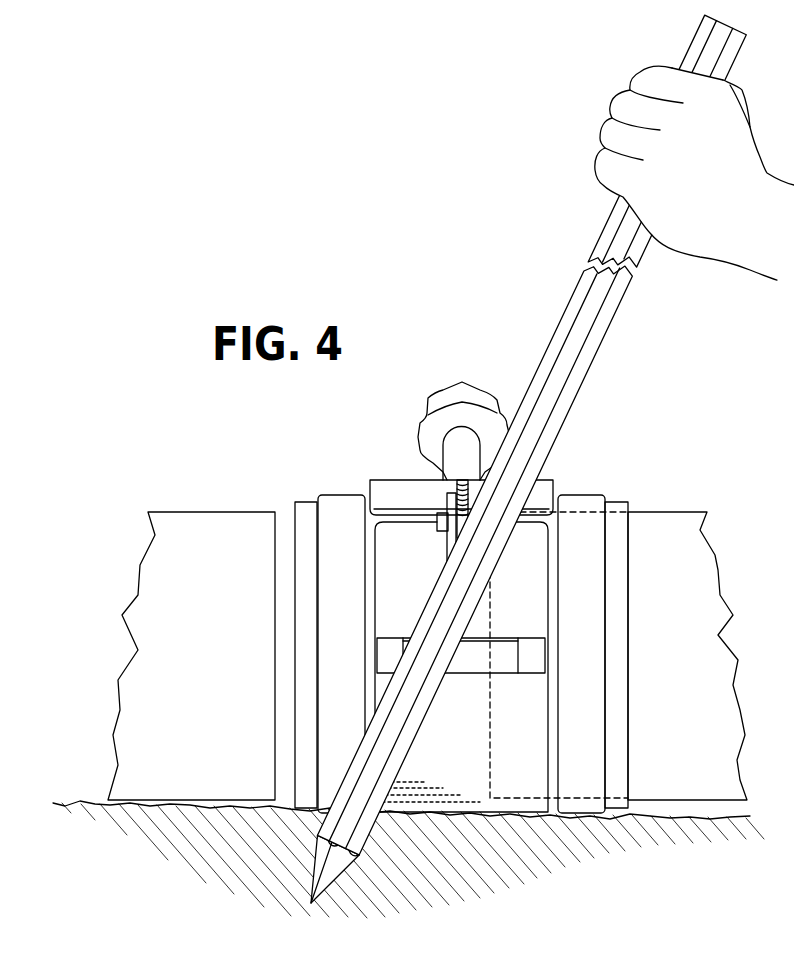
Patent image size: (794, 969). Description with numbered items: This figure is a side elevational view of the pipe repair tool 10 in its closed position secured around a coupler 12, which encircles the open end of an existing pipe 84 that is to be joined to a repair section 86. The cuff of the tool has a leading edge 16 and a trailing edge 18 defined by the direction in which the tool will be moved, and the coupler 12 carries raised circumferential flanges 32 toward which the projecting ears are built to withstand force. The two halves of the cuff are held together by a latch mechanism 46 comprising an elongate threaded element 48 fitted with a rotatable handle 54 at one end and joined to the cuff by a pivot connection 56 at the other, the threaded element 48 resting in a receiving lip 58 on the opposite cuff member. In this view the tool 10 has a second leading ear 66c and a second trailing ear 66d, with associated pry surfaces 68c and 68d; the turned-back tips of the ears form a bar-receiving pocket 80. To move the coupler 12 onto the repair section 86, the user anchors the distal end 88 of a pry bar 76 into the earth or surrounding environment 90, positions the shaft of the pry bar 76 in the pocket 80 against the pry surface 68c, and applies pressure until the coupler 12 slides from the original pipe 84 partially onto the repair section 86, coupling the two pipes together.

The pipe repair tool 10 is at (461, 604).
The coupler 12 is at (461, 569).
The leading edge 16 is at (362, 568).
The trailing edge 18 is at (557, 568).
The raised circumferential flange 32 is at (352, 613).
The latch mechanism 46 is at (436, 498).
The elongate threaded element 48 is at (462, 503).
The rotatable handle 54 is at (462, 382).
The pivot connection 56 is at (440, 527).
The receiving lip 58 is at (385, 480).
The second leading ear 66c is at (377, 655).
The second trailing ear 66d is at (546, 655).
The pry surface 68c is at (415, 638).
The pry surface 68d is at (510, 638).
The pry bar 76 is at (498, 464).
The pocket 80 is at (460, 653).
The existing pipe section 84 is at (660, 672).
The repair section 86 is at (187, 672).
The distal end of the bar 88 is at (325, 873).
The earth or surrounding environment 90 is at (83, 803).